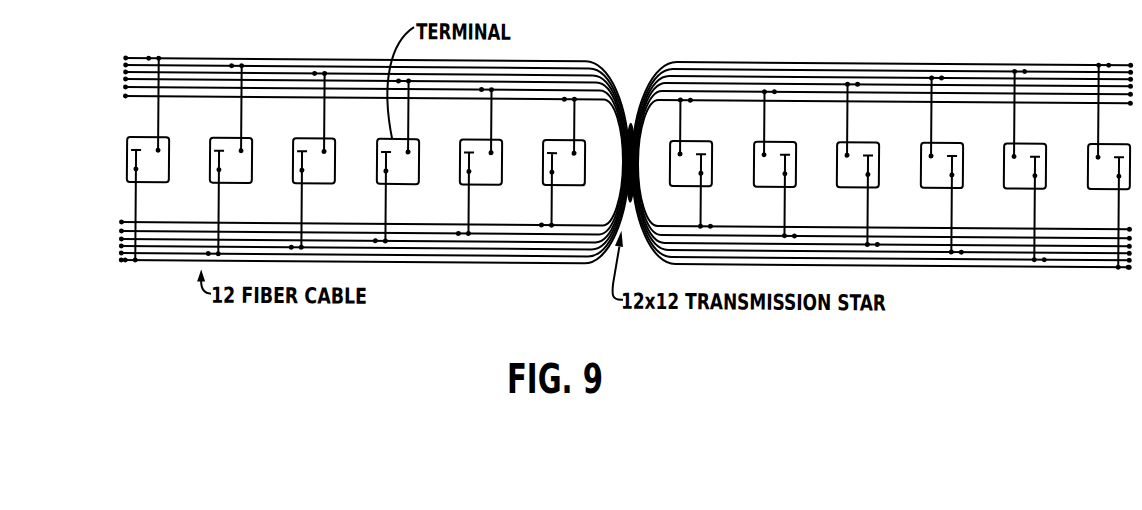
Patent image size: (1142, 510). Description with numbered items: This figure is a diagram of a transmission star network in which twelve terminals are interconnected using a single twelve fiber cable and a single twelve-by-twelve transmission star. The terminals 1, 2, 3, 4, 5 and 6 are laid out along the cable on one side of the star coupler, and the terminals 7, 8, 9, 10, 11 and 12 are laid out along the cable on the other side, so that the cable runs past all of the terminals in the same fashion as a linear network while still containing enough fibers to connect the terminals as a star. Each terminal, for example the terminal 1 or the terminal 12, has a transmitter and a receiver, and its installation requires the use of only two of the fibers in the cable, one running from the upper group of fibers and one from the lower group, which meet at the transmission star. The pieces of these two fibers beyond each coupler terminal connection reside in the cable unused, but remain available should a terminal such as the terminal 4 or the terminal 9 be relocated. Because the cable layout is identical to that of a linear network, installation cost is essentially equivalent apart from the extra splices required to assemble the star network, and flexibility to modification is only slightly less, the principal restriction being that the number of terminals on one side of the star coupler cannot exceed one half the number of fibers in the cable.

The terminal 1 is at (147, 159).
The terminal 2 is at (230, 160).
The terminal 3 is at (313, 160).
The terminal 4 is at (397, 161).
The terminal 5 is at (480, 161).
The terminal 6 is at (564, 162).
The terminal 7 is at (691, 163).
The terminal 8 is at (774, 164).
The terminal 9 is at (857, 164).
The terminal 10 is at (939, 165).
The terminal 11 is at (1022, 165).
The terminal 12 is at (1106, 166).